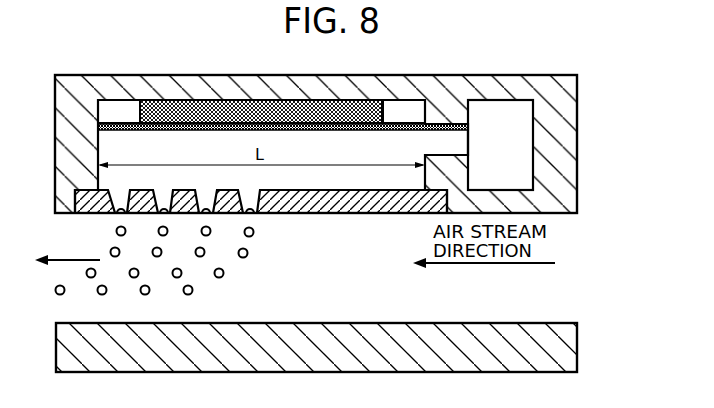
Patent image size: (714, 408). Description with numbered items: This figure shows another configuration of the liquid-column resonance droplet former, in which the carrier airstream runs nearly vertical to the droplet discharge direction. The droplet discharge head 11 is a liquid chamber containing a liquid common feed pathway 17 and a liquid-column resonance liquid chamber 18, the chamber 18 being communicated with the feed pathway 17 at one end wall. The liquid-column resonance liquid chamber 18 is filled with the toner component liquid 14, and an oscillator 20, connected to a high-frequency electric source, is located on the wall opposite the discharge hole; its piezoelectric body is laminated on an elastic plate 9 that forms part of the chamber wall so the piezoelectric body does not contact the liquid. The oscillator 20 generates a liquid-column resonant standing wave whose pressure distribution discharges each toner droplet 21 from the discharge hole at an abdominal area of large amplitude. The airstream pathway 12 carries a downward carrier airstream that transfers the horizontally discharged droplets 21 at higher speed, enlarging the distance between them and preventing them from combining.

The droplet discharge head 11 is at (557, 75).
The liquid-column resonance liquid chamber 18 is at (317, 140).
The liquid common feed pathway 17 is at (506, 119).
The oscillator 20 is at (235, 110).
The elastic plate 9 is at (397, 123).
The toner component liquid 14 is at (333, 182).
The toner droplet 21 is at (254, 232).
The airstream pathway 12 is at (535, 290).